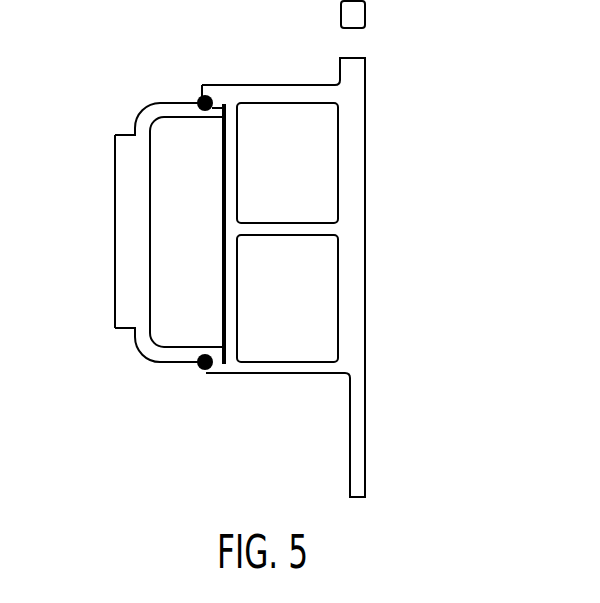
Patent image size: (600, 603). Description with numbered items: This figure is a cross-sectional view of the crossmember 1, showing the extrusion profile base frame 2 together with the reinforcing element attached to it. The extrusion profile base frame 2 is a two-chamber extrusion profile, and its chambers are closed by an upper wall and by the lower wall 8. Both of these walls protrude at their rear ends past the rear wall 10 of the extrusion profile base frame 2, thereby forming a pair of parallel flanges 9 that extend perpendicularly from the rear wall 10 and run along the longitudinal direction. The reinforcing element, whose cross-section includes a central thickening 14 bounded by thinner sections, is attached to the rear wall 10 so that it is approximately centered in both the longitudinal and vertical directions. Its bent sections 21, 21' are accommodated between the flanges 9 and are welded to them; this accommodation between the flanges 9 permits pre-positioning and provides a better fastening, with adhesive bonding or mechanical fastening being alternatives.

The crossmember 1 is at (452, 29).
The extrusion profile base frame 2 is at (414, 209).
The lower wall 8 is at (282, 83).
The flanges 9 is at (217, 83).
The rear wall 10 is at (210, 241).
The central thickening 14 is at (115, 219).
The bent section 21 is at (186, 62).
The bent section 21' is at (187, 401).